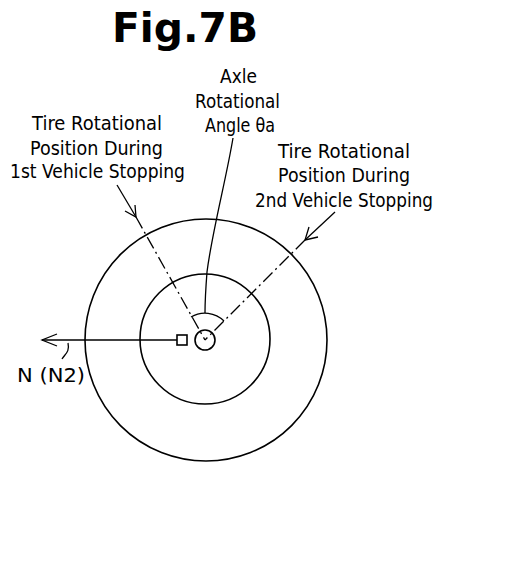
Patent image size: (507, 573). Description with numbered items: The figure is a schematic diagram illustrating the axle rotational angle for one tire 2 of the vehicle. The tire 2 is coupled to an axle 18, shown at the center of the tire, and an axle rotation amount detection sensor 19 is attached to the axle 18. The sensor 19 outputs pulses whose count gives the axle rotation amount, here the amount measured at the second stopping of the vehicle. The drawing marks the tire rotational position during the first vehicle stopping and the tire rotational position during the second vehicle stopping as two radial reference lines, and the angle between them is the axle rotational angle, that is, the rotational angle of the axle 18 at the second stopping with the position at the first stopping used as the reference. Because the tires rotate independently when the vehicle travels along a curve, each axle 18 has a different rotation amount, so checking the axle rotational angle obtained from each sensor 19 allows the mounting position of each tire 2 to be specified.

The tire 2 is at (207, 462).
The axle 18 is at (213, 350).
The axle rotation amount detection sensor 19 is at (182, 345).